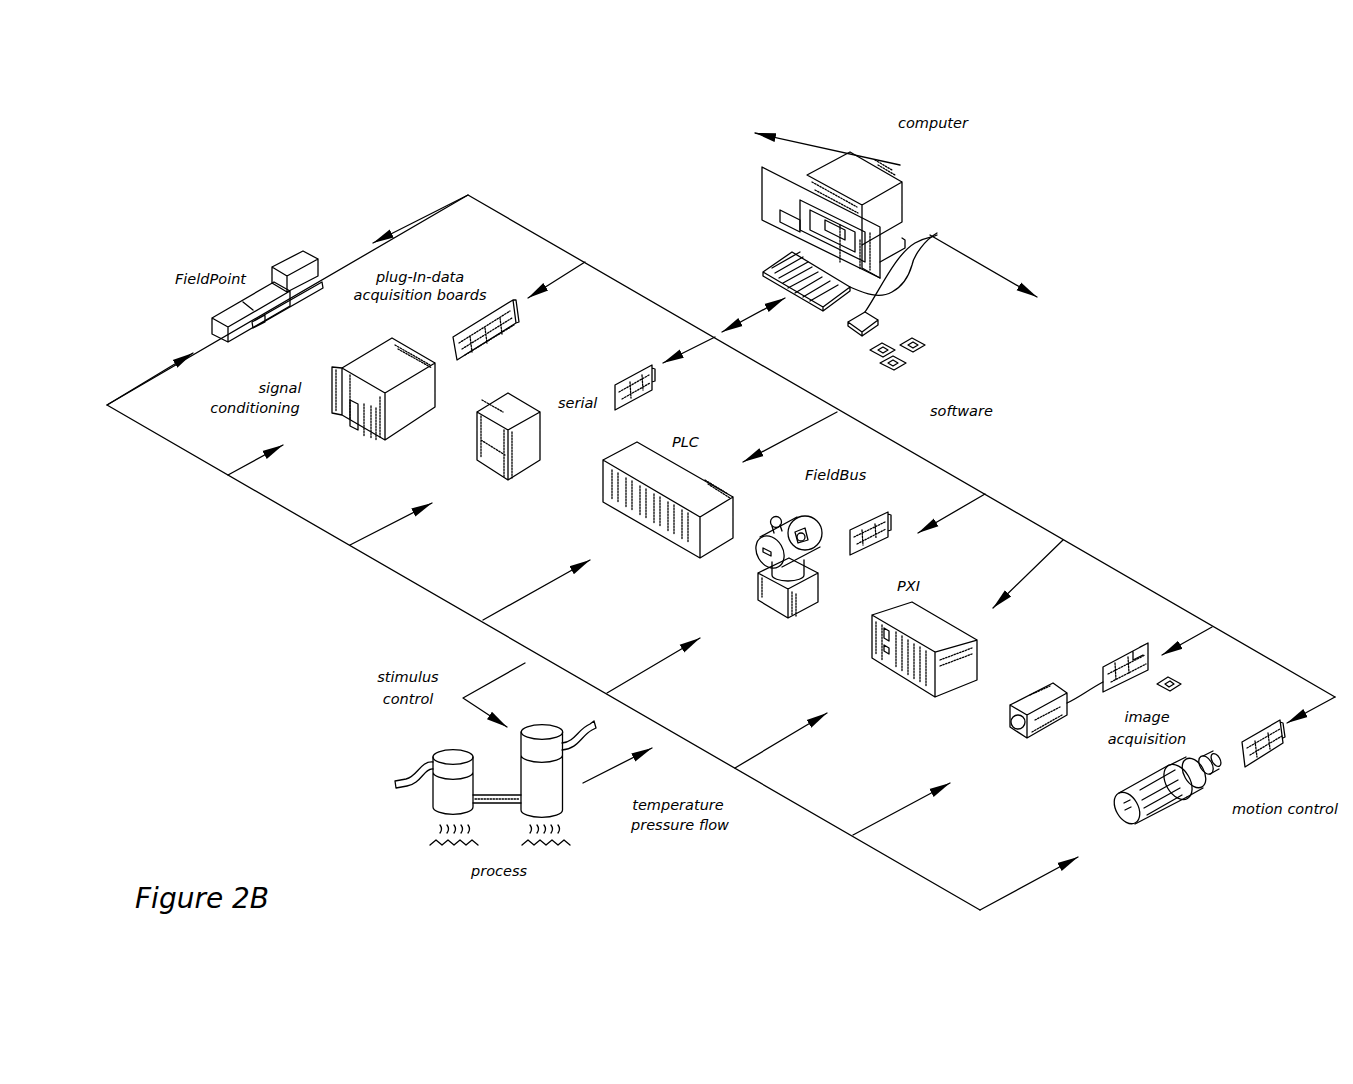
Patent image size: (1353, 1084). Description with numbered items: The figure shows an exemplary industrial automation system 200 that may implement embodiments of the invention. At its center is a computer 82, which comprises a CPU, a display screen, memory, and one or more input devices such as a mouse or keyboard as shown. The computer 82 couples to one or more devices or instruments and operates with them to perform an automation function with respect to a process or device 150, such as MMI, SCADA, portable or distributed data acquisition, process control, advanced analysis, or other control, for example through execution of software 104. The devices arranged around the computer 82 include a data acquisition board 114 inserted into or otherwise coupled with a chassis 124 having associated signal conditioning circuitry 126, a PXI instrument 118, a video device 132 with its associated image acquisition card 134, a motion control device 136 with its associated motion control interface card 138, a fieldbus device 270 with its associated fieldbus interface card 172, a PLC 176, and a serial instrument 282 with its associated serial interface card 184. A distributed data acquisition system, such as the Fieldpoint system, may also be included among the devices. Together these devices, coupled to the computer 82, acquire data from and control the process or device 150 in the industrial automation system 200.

The industrial automation system 200 is at (1078, 197).
The computer 82 is at (872, 172).
The software 104 is at (895, 372).
The data acquisition board 114 is at (490, 344).
The chassis 124 is at (369, 392).
The signal conditioning circuitry 126 is at (355, 432).
The serial interface card 184 is at (616, 378).
The serial instrument 282 is at (491, 466).
The PLC 176 is at (620, 516).
The fieldbus device 270 is at (770, 614).
The fieldbus interface card 172 is at (866, 517).
The PXI instrument 118 is at (929, 618).
The video device 132 is at (1042, 687).
The image acquisition card 134 is at (1117, 655).
The motion control interface card 138 is at (1268, 753).
The motion control device 136 is at (1157, 817).
The process or device 150 is at (405, 777).